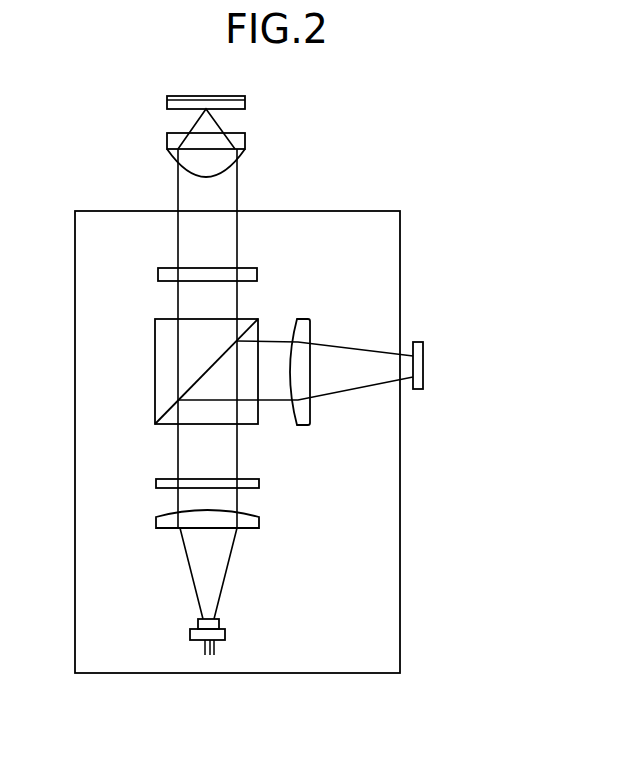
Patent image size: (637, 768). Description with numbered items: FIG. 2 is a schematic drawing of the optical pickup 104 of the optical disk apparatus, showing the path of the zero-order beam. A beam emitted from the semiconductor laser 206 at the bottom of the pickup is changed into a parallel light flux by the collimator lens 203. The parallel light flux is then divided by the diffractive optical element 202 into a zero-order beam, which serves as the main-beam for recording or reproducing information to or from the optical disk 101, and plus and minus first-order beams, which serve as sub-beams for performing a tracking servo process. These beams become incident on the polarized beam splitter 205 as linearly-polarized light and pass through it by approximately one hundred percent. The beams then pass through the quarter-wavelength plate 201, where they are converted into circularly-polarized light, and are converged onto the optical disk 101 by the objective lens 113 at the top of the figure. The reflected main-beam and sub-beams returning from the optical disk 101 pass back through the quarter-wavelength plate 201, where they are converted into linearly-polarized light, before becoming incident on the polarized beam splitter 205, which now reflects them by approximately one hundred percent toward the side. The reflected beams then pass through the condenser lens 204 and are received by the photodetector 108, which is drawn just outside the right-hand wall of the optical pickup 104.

The optical disk 101 is at (246, 102).
The objective lens 113 is at (246, 142).
The optical pickup 104 is at (401, 233).
The quarter-wavelength plate 201 is at (258, 273).
The polarized beam splitter 205 is at (155, 365).
The condenser lens 204 is at (311, 322).
The photodetector 108 is at (424, 360).
The diffractive optical element 202 is at (260, 482).
The collimator lens 203 is at (260, 520).
The semiconductor laser 206 is at (226, 632).